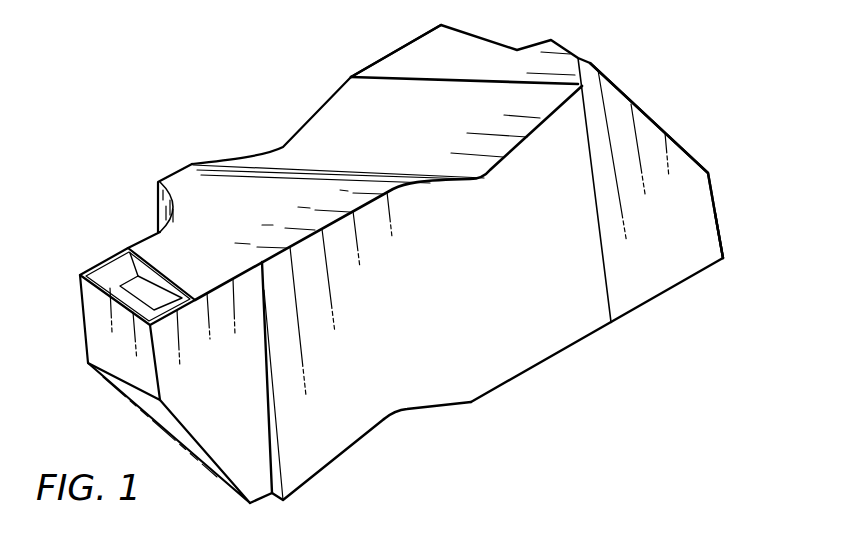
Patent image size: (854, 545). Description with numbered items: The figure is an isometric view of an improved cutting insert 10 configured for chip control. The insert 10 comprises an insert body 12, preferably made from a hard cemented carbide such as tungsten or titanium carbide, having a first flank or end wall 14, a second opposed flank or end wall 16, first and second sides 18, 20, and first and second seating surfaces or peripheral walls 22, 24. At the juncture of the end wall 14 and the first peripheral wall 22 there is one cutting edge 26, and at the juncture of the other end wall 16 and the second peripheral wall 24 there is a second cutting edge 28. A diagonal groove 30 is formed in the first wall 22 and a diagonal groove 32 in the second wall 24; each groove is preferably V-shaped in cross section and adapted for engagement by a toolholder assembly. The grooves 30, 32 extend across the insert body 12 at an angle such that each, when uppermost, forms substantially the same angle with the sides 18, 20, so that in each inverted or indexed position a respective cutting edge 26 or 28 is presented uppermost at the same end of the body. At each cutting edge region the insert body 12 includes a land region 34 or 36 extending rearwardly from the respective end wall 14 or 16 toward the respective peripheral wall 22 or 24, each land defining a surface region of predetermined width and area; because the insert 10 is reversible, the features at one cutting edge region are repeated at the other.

The cutting insert 10 is at (688, 90).
The insert body 12 is at (581, 316).
The first flank or end wall 14 is at (100, 332).
The second opposed flank or end wall 16 is at (716, 213).
The first side 18 is at (172, 175).
The second side 20 is at (313, 453).
The first seating surface or peripheral wall 22 is at (402, 51).
The second seating surface or peripheral wall 24 is at (506, 380).
The cutting edge 26 is at (102, 297).
The second cutting edge 28 is at (723, 258).
The diagonal groove 30 is at (307, 128).
The diagonal groove 32 is at (405, 409).
The land region 34 is at (100, 265).
The land region 36 is at (691, 278).